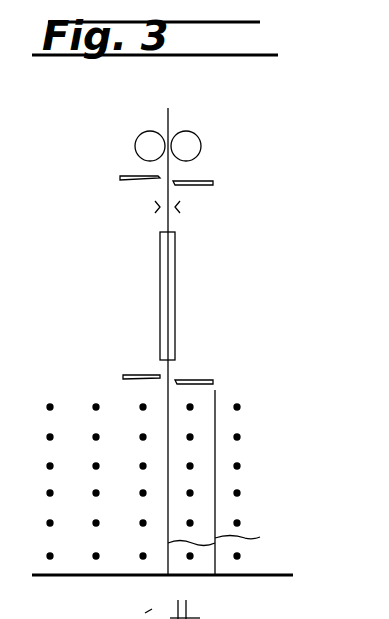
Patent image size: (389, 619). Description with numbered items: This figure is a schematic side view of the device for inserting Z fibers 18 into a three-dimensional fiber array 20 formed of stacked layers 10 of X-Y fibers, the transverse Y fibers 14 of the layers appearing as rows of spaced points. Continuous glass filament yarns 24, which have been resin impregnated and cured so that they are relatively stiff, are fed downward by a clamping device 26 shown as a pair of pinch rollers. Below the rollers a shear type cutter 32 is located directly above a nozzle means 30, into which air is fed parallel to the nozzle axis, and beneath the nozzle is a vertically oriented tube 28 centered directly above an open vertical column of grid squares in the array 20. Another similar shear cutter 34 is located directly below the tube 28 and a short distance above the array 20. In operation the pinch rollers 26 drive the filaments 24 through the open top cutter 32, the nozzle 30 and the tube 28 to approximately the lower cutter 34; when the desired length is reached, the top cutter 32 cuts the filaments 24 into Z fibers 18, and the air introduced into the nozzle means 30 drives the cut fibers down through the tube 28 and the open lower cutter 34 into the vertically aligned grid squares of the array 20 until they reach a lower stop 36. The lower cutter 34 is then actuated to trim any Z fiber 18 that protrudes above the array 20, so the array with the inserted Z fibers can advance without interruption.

The layers of X-Y fibers 10 is at (247, 493).
The transverse Y fibers 14 is at (97, 407).
The Z fibers 18 is at (230, 538).
The array 20 is at (300, 447).
The glass filament yarns 24 is at (170, 119).
The clamping device 26 is at (137, 145).
The tubes 28 is at (160, 253).
The nozzle means 30 is at (175, 207).
The shear type cutter 32 is at (203, 177).
The lower shear cutter 34 is at (198, 377).
The lower stop 36 is at (257, 577).